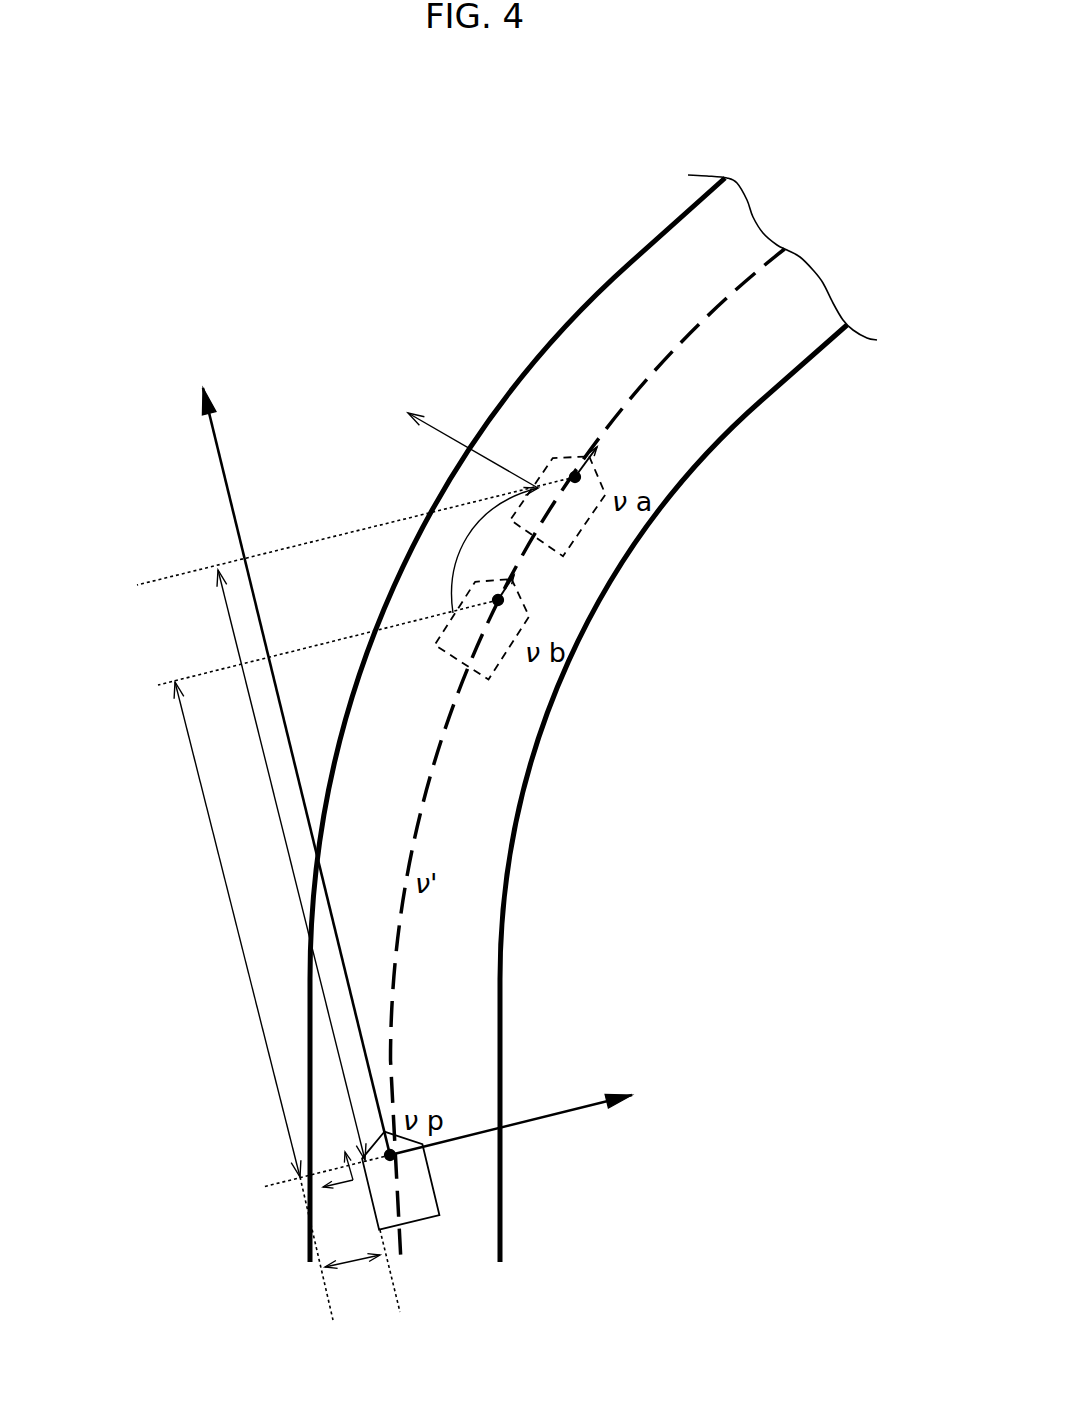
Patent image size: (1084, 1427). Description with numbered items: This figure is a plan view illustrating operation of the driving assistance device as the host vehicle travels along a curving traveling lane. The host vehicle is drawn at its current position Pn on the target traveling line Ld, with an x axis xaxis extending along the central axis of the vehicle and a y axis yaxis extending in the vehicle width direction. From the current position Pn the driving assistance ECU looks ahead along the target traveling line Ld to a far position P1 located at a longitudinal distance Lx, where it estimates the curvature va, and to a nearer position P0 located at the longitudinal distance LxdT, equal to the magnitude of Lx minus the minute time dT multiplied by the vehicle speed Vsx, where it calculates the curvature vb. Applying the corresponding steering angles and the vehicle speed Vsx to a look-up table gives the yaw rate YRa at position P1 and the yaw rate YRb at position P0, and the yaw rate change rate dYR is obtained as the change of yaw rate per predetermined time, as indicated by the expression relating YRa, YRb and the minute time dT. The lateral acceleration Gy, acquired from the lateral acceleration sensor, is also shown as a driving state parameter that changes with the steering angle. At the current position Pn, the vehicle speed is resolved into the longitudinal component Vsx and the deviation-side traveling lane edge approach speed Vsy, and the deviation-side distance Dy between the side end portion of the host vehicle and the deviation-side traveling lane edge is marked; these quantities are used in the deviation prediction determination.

The target traveling line Ld is at (395, 942).
The x axis xaxis is at (251, 771).
The y axis yaxis is at (525, 1125).
The position P1 is at (574, 504).
The position P0 is at (497, 629).
The current position Pn is at (393, 1158).
The yaw rate YRa is at (570, 448).
The yaw rate YRb is at (487, 575).
The lateral acceleration Gy is at (473, 450).
The minute time ΔT dT is at (479, 551).
The yaw rate change rate dYR is at (902, 513).
The longitudinal distance Lx is at (291, 865).
The longitudinal distance |Lx-ΔT·Vsx| LxdT is at (205, 929).
The vehicle speed Vsx is at (337, 1156).
The deviation-side traveling lane edge approach speed Vsy is at (341, 1198).
The deviation-side distance Dy is at (350, 1248).